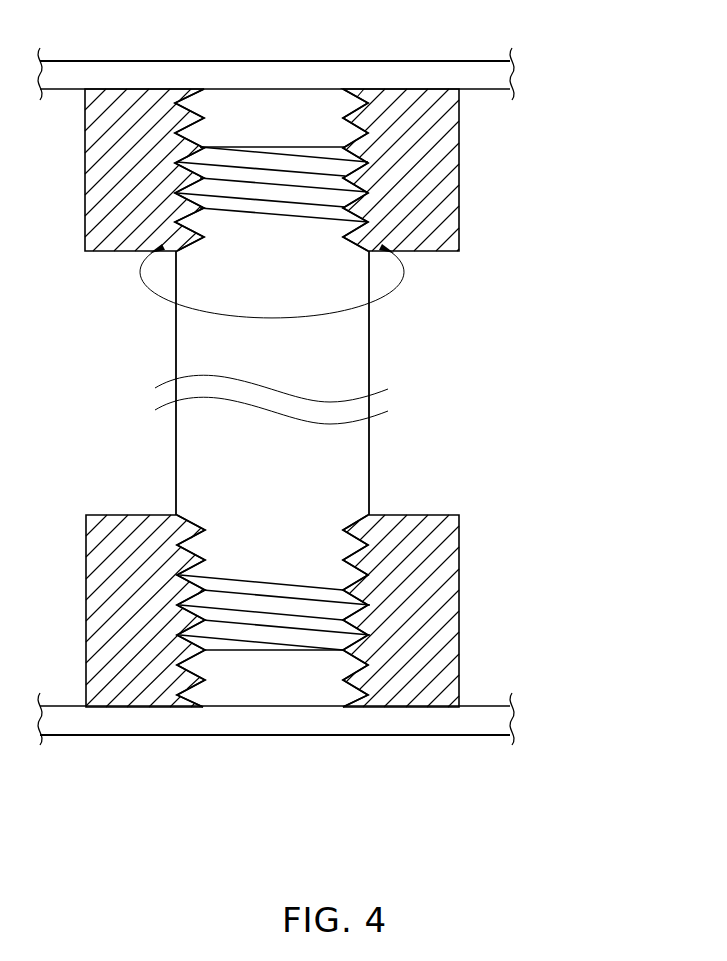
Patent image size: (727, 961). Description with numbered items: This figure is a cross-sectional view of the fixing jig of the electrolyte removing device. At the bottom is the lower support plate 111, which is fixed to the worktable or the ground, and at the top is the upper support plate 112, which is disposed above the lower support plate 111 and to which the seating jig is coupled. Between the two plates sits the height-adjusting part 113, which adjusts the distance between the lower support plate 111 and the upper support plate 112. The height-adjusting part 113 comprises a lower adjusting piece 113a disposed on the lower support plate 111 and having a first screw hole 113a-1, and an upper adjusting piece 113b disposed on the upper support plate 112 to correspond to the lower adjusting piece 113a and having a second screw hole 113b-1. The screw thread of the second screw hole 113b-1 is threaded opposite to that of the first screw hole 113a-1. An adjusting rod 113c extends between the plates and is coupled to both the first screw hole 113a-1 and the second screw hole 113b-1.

The lower support plate 111 is at (457, 732).
The upper support plate 112 is at (458, 70).
The height-adjusting part 113 is at (359, 399).
The lower adjusting piece 113a is at (324, 645).
The first screw hole 113a-1 is at (205, 672).
The upper adjusting piece 113b is at (323, 162).
The second screw hole 113b-1 is at (202, 125).
The adjusting rod 113c is at (355, 452).